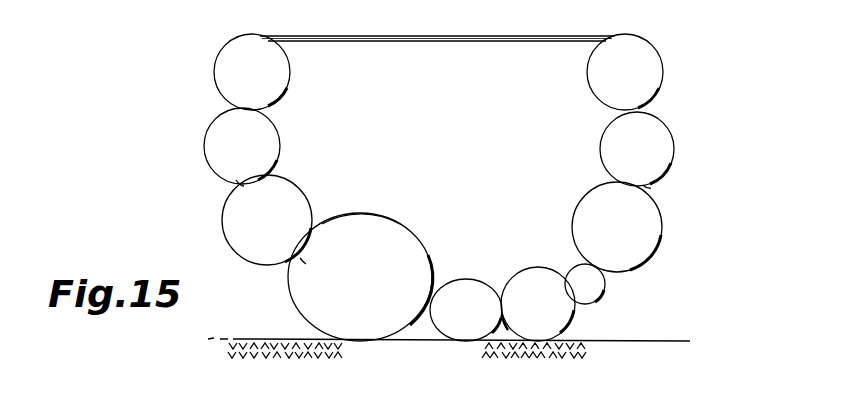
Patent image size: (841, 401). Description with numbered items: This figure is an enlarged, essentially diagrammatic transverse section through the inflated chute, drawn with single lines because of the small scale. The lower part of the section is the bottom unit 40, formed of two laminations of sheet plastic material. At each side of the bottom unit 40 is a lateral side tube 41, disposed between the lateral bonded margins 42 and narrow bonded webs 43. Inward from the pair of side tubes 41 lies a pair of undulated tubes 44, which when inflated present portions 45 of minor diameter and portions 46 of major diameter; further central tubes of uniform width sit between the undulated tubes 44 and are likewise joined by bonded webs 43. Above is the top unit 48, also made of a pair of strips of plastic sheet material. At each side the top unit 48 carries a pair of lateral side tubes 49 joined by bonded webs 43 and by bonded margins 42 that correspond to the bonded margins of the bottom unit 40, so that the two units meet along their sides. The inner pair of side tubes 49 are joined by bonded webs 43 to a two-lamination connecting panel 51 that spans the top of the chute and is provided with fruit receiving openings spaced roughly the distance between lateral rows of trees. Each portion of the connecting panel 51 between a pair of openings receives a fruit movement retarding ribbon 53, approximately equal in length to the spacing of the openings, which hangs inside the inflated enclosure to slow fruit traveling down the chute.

The bottom unit 40 is at (466, 223).
The lateral side tubes 41 is at (222, 232).
The bonded margins 42 is at (240, 182).
The bonded webs 43 is at (292, 266).
The undulated tubes 44 is at (374, 299).
The portions of minor diameter 45 is at (571, 268).
The portions of major diameter 46 is at (362, 214).
The top unit 48 is at (435, 110).
The lateral side tubes 49 is at (203, 95).
The connecting panel 51 is at (386, 39).
The fruit movement retarding ribbon 53 is at (483, 36).